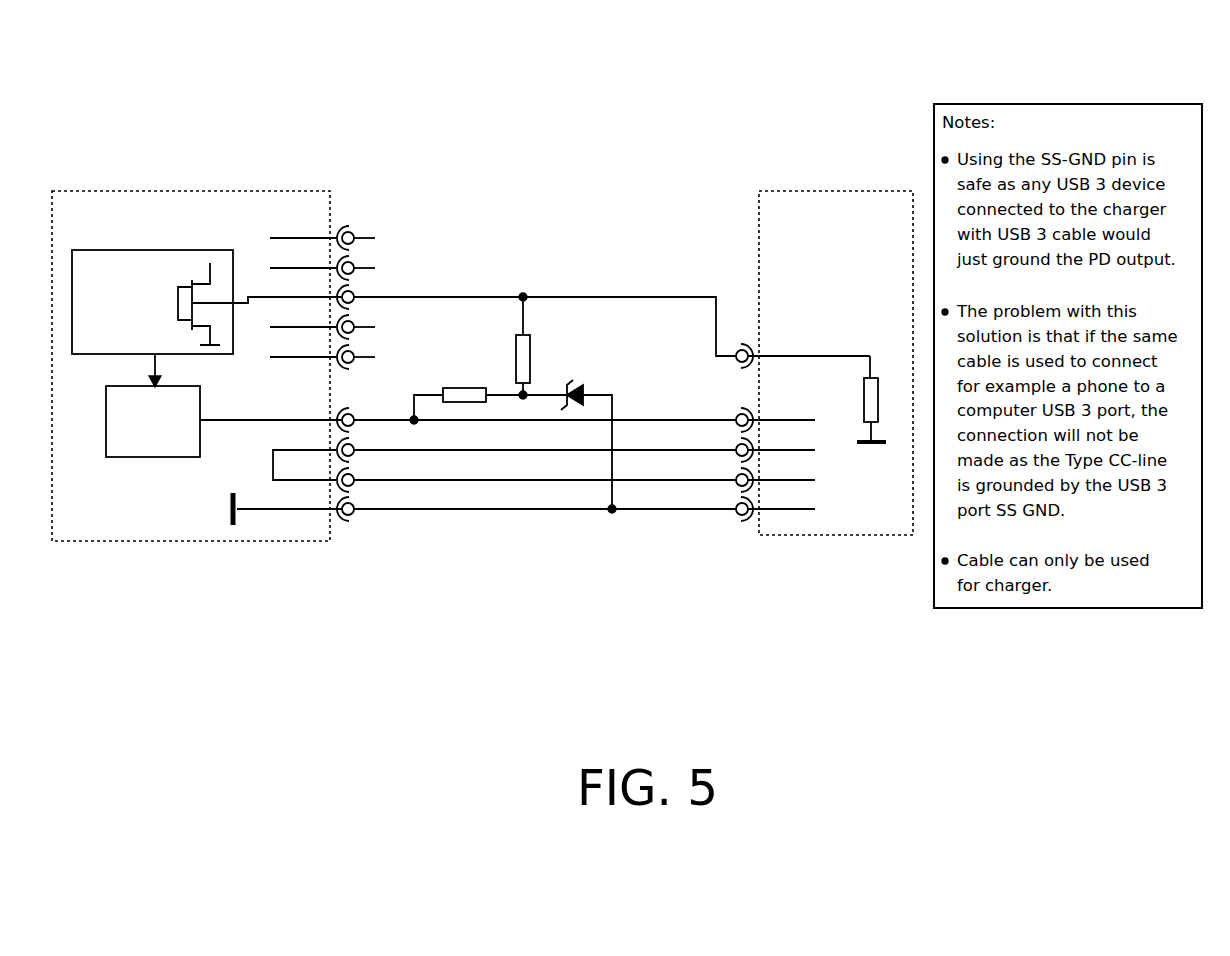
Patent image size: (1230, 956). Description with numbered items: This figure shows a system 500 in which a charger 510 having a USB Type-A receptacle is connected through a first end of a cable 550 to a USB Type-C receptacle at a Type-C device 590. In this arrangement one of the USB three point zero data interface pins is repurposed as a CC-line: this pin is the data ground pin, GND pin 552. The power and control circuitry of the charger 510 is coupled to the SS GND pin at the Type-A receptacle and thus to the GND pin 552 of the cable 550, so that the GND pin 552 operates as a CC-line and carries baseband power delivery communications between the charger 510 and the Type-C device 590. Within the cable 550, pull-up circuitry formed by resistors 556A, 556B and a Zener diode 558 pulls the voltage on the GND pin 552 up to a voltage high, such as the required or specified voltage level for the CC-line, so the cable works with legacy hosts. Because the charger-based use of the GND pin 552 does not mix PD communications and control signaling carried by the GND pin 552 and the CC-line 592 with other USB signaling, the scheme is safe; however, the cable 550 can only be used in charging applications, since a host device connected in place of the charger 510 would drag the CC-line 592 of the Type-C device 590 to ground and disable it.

The system 500 is at (658, 43).
The charger 510 is at (206, 225).
The cable 550 is at (758, 193).
The GND pin 552 is at (368, 296).
The resistor 556A is at (516, 352).
The resistor 556B is at (463, 390).
The Zener diode 558 is at (590, 390).
The Type-C device 590 is at (850, 298).
The CC-line 592 is at (876, 376).